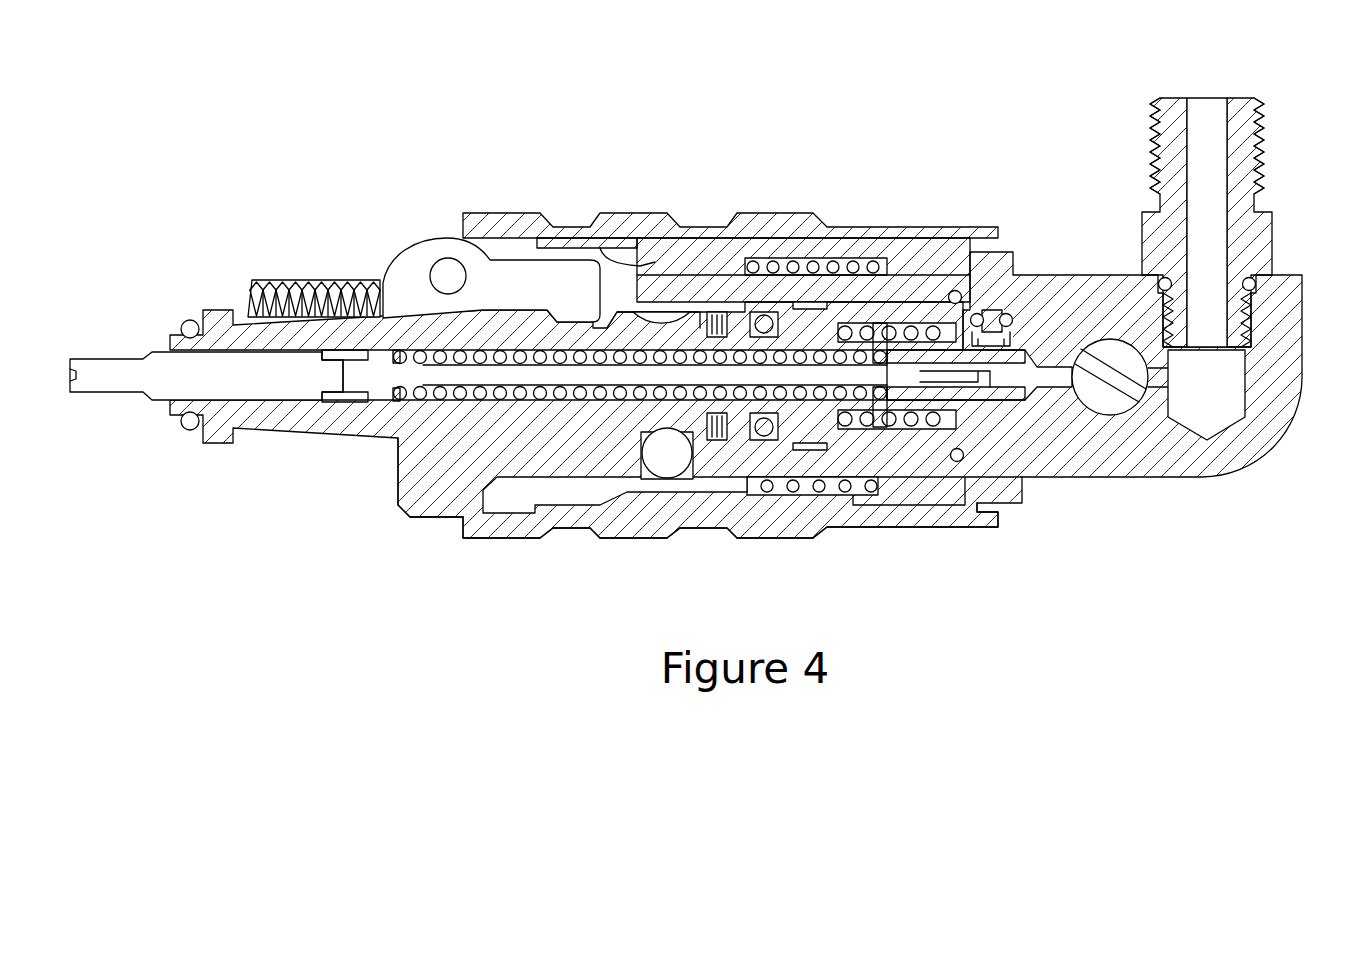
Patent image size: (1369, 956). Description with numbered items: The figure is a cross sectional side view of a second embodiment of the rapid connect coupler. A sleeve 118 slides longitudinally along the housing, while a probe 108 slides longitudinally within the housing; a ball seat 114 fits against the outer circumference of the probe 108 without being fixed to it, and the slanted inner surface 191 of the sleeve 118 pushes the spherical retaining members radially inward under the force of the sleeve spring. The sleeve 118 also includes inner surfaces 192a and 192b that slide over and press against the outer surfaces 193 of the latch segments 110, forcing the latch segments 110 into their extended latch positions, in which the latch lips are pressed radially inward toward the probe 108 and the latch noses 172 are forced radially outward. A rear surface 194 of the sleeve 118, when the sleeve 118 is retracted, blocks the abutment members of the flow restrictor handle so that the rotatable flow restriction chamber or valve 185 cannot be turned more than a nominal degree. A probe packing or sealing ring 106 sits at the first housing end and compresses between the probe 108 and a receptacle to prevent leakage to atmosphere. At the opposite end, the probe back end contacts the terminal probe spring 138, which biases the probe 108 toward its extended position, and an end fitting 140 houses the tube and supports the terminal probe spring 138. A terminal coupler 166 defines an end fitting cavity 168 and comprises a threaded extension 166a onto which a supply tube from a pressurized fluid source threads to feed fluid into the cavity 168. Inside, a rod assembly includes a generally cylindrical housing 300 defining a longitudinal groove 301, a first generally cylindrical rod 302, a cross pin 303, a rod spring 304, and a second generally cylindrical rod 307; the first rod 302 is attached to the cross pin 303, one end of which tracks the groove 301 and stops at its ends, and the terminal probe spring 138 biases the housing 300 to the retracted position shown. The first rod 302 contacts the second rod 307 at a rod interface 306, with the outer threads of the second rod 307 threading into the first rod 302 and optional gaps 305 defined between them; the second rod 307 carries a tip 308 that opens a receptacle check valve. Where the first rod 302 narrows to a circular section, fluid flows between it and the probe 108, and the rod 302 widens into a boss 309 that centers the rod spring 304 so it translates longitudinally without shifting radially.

The probe packing or sealing ring 106 is at (188, 320).
The probe 108 is at (223, 310).
The latch segments 110 is at (395, 287).
The ball seat 114 is at (700, 433).
The sleeve 118 is at (860, 227).
The terminal probe spring 138 is at (868, 424).
The end fitting 140 is at (1022, 487).
The terminal coupler 166 is at (1257, 207).
The threaded extension 166a is at (1263, 133).
The end fitting cavity 168 is at (1210, 253).
The latch noses 172 is at (318, 283).
The rotatable flow restriction chamber or valve 185 is at (1133, 388).
The slanted inner surface 191 is at (660, 485).
The inner surface 192a is at (657, 267).
The inner surface 192b is at (645, 280).
The outer surfaces 193 is at (573, 275).
The rear surface 194 is at (998, 517).
The housing 300 is at (1017, 353).
The longitudinal groove 301 is at (985, 382).
The first generally cylindrical rod 302 is at (533, 375).
The cross pin 303 is at (905, 367).
The rod spring 304 is at (403, 397).
The gaps 305 is at (337, 400).
The rod interface 306 is at (337, 375).
The second generally cylindrical rod 307 is at (222, 377).
The tip 308 is at (93, 373).
The boss 309 is at (423, 355).